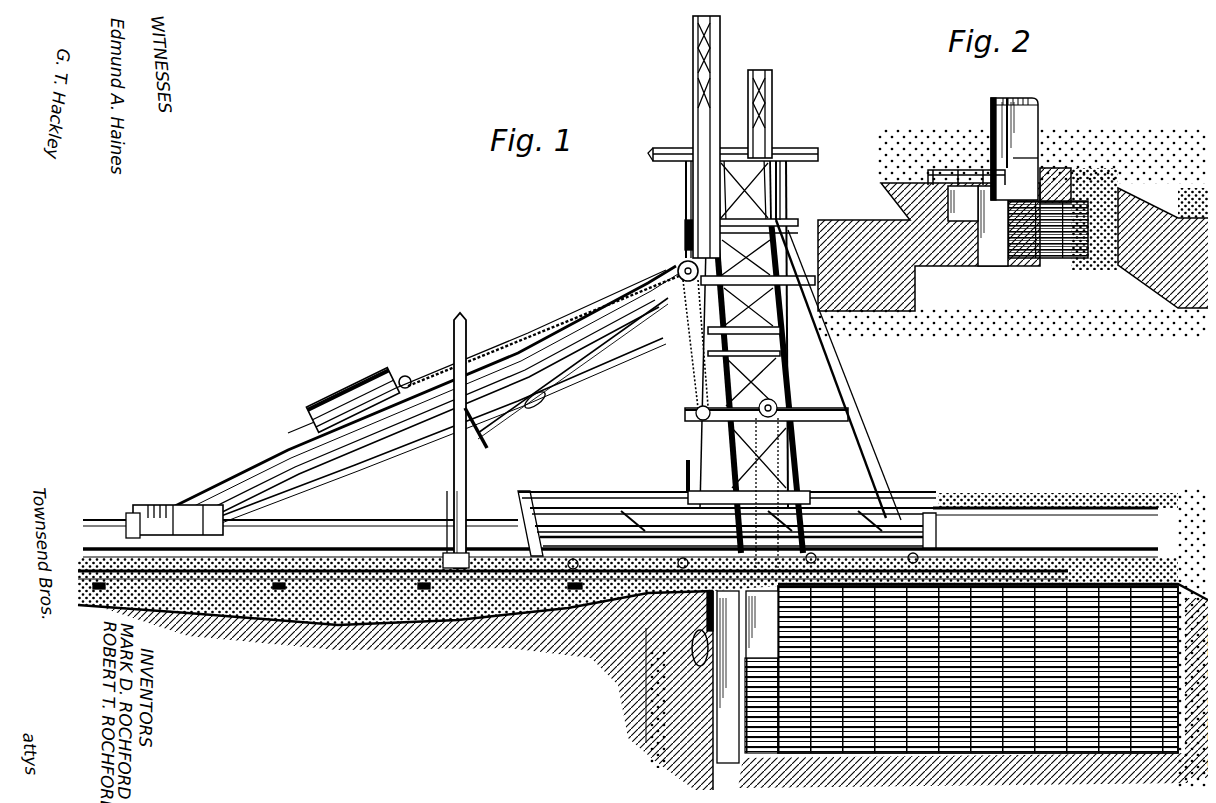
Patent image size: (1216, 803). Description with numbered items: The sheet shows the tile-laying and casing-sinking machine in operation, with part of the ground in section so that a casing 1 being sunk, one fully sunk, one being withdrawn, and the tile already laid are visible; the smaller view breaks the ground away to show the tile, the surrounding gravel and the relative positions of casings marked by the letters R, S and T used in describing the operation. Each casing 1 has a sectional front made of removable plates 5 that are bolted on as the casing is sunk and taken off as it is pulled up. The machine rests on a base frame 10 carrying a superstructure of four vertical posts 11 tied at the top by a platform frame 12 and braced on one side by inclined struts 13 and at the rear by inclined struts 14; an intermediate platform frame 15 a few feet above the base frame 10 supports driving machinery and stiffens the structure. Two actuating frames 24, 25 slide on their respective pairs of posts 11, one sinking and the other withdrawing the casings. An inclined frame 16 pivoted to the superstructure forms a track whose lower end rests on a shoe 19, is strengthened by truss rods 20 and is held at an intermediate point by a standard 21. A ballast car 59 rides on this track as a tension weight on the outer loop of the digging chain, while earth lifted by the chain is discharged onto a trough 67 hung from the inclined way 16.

In FIG. 1, the casing 1 is at (678, 238).
In FIG. 2, the casing 1 is at (1025, 124).
In FIG. 1, the plates 5 is at (680, 452).
In FIG. 2, the plates 5 is at (955, 165).
In FIG. 1, the base frame 10 is at (612, 486).
In FIG. 1, the vertical posts 11 is at (688, 174).
In FIG. 1, the platform frame 12 is at (788, 142).
In FIG. 1, the inclined struts 13 is at (695, 425).
In FIG. 1, the inclined struts 14 is at (818, 360).
In FIG. 1, the intermediate platform frame 15 is at (677, 406).
In FIG. 1, the inclined frame 16 is at (272, 447).
In FIG. 1, the shoe 19 is at (150, 494).
In FIG. 1, the truss rods 20 is at (378, 458).
In FIG. 1, the standard 21 is at (460, 324).
In FIG. 1, the actuating frame 24 is at (686, 86).
In FIG. 1, the actuating frame 25 is at (765, 100).
In FIG. 1, the tension weight car 59 is at (346, 378).
In FIG. 1, the trough 67 is at (566, 372).
In FIG. 2, the reference letter R is at (1024, 161).
In FIG. 2, the reference letter T is at (955, 210).
In FIG. 2, the reference letter S is at (987, 260).